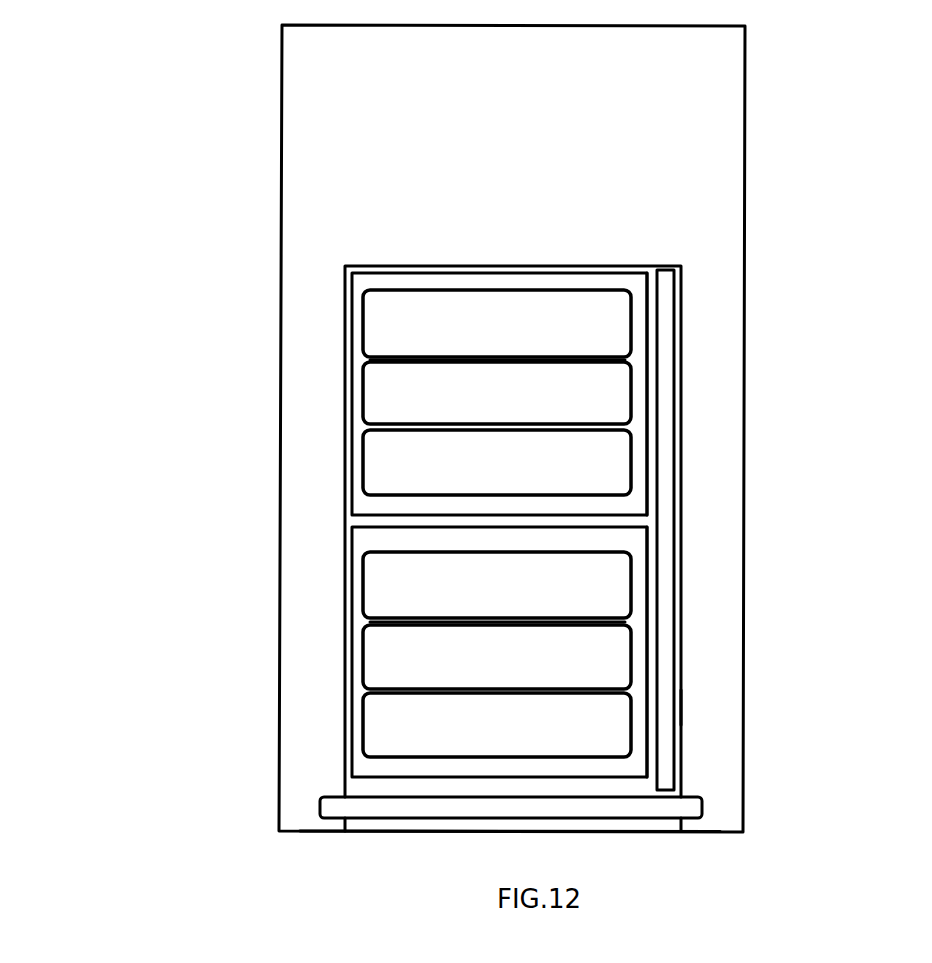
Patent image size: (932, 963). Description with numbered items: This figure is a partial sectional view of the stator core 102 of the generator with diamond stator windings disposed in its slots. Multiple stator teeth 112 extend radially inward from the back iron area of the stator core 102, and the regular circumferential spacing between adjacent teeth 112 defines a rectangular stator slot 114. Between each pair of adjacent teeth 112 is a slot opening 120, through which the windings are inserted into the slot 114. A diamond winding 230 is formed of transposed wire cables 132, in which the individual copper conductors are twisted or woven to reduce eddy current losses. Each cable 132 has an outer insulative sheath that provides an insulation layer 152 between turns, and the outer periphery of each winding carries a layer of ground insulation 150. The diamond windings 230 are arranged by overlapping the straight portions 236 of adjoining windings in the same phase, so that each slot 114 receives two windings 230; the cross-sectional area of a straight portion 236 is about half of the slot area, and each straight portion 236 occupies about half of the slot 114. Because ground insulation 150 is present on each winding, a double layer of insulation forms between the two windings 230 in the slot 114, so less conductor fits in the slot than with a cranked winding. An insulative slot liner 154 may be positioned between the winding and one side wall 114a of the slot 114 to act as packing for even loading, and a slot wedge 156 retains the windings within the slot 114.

The stator core 102 is at (515, 428).
The stator tooth 112 is at (298, 472).
The stator slot 114 is at (612, 787).
The slot side wall 114a is at (676, 692).
The slot opening 120 is at (403, 833).
The transposed wire cable 132 is at (520, 343).
The ground insulation 150 is at (372, 288).
The insulation layer 152 is at (430, 363).
The slot liner 154 is at (675, 633).
The slot wedge 156 is at (672, 813).
The diamond winding 230 is at (765, 525).
The straight portion 236 is at (648, 408).